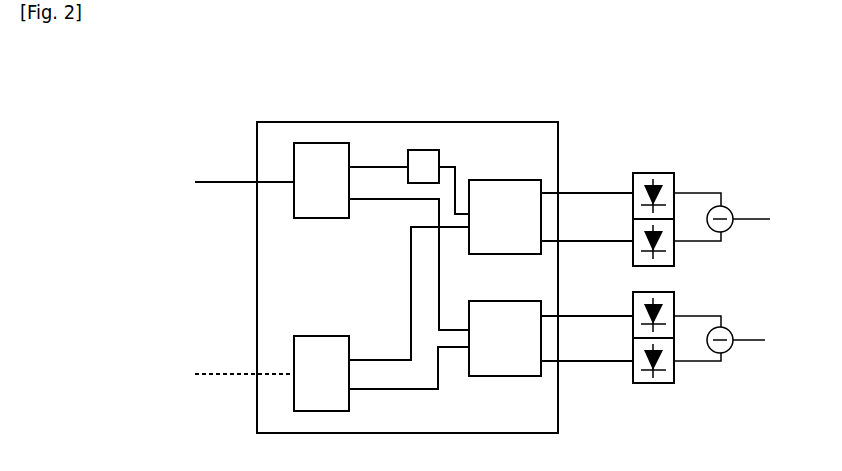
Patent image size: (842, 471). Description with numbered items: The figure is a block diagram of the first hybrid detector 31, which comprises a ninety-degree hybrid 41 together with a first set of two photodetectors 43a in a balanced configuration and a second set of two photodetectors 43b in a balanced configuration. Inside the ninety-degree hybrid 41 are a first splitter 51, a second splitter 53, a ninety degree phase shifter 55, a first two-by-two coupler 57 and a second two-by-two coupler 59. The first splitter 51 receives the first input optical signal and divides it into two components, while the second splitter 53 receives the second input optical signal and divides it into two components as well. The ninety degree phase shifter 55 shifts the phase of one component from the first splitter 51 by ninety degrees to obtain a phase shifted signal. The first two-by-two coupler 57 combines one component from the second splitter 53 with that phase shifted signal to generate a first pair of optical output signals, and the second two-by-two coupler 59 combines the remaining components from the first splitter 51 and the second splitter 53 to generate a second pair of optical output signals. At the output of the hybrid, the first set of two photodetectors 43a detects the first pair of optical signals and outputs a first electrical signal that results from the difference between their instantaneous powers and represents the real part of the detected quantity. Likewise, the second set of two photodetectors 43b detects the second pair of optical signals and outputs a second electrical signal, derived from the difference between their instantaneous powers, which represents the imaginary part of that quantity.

The first hybrid detector 31 is at (472, 92).
The 90-degree hybrid 41 is at (523, 130).
The first splitter 51 is at (330, 205).
The second splitter 53 is at (320, 353).
The 90 degree phase shifter 55 is at (422, 165).
The first 2×2 coupler 57 is at (507, 192).
The second 2×2 coupler 59 is at (503, 320).
The first set of two photodetectors 43a is at (663, 179).
The second set of two photodetectors 43b is at (665, 313).